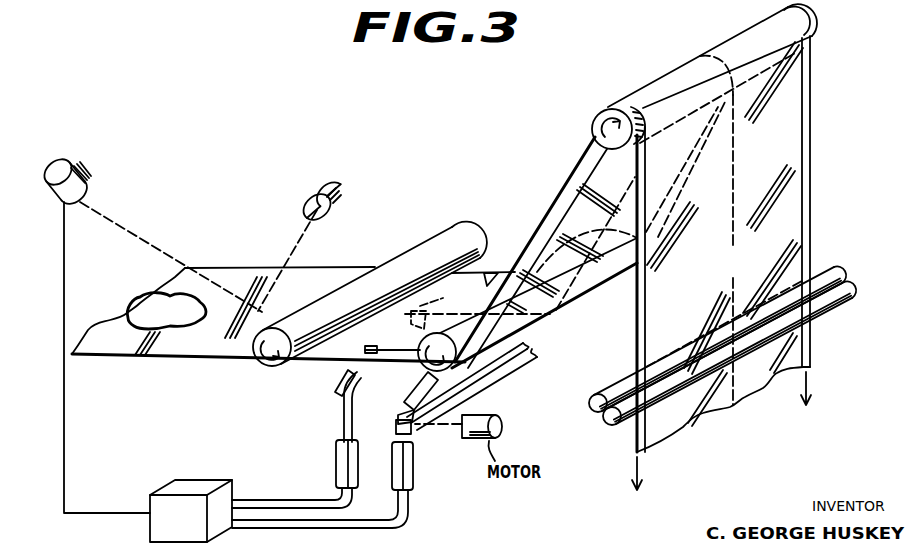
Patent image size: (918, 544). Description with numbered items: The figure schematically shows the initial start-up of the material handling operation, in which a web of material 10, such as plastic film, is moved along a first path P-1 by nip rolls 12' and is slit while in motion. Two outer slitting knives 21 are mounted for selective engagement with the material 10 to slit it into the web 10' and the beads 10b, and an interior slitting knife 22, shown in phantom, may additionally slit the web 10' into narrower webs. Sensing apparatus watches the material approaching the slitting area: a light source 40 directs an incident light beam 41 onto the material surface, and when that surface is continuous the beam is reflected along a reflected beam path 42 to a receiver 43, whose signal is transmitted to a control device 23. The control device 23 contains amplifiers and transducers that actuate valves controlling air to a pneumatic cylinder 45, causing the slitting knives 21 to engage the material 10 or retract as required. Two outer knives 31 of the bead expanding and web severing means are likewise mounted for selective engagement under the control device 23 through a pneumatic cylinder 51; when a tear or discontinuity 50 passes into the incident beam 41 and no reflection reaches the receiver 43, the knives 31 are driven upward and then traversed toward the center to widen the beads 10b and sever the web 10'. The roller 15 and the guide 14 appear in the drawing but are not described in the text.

The web of material 10 is at (268, 331).
The tear or discontinuity 50 is at (175, 322).
The receiver 43 is at (84, 176).
The reflected beam path 42 is at (140, 235).
The light source 40 is at (332, 188).
The incident light beam 41 is at (297, 243).
The outer slitting knives 21 is at (488, 272).
The interior slitting knife 22 is at (477, 305).
The beads 10b is at (500, 271).
The upper roller 15 is at (600, 111).
The web 10' is at (721, 266).
The nip rolls 12' is at (741, 337).
The first path P-1 is at (807, 344).
The guide plate 14 is at (448, 371).
The outer knives 31 is at (410, 393).
The pneumatic cylinder 45 is at (335, 456).
The pneumatic cylinder 51 is at (414, 470).
The control device 23 is at (191, 533).